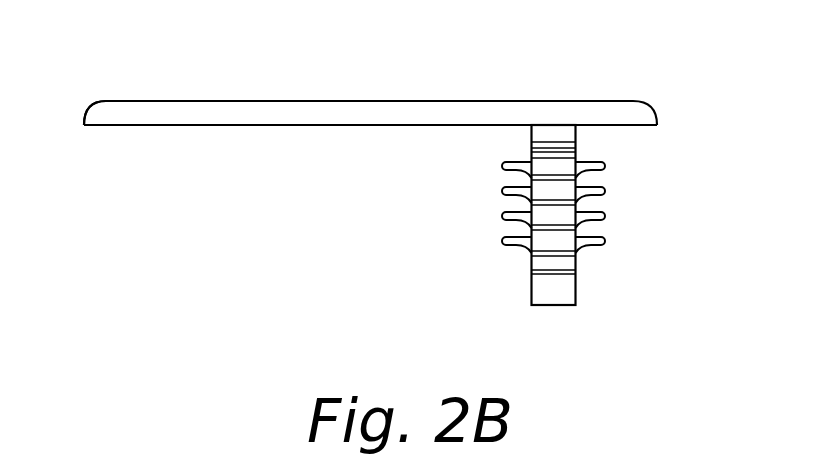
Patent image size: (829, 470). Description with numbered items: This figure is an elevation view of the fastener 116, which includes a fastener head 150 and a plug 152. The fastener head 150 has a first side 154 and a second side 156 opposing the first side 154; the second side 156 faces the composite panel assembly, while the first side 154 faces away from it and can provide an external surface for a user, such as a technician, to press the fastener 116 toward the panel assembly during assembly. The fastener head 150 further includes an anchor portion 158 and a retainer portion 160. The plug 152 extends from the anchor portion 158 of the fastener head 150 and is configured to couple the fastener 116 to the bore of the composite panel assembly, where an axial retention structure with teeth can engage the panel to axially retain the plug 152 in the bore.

The fastener 116 is at (710, 70).
The fastener head 150 is at (79, 61).
The plug 152 is at (498, 127).
The first side 154 is at (605, 100).
The second side 156 is at (647, 127).
The anchor portion 158 is at (611, 138).
The retainer portion 160 is at (240, 91).